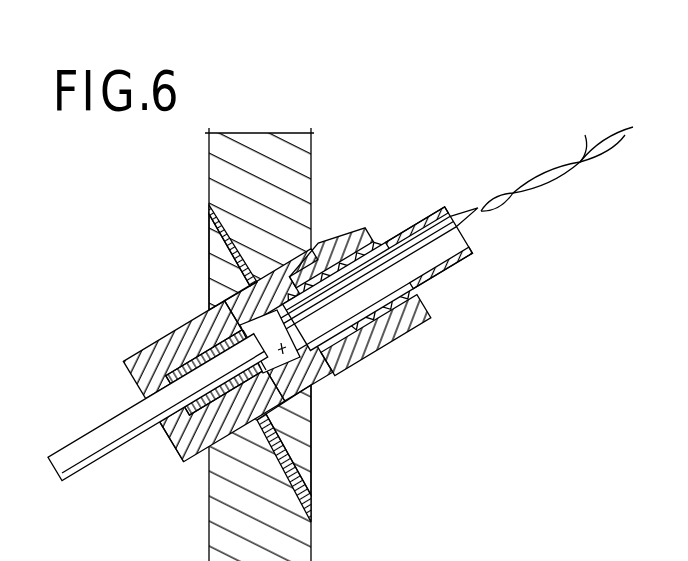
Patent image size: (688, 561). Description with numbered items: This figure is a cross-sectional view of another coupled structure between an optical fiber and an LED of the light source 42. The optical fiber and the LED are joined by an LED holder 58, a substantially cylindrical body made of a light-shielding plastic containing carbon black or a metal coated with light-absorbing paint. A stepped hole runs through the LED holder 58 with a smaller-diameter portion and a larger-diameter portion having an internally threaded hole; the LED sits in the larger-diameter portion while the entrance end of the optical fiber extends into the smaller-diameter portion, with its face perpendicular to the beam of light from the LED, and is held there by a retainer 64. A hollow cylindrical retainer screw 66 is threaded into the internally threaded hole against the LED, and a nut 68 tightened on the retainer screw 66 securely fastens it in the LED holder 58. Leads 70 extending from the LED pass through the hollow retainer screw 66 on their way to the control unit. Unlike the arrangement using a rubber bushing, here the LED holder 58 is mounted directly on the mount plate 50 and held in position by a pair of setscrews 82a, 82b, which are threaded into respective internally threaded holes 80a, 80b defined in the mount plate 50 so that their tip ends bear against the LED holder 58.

The light source 42 is at (405, 185).
The mount plate 50 is at (271, 142).
The LED holder 58 is at (165, 462).
The retainer 64 is at (175, 331).
The retainer screw 66 is at (468, 258).
The nut 68 is at (417, 327).
The leads 70 is at (548, 190).
The internally threaded hole 80a is at (213, 225).
The internally threaded hole 80b is at (315, 500).
The setscrew 82a is at (212, 277).
The setscrew 82b is at (315, 430).